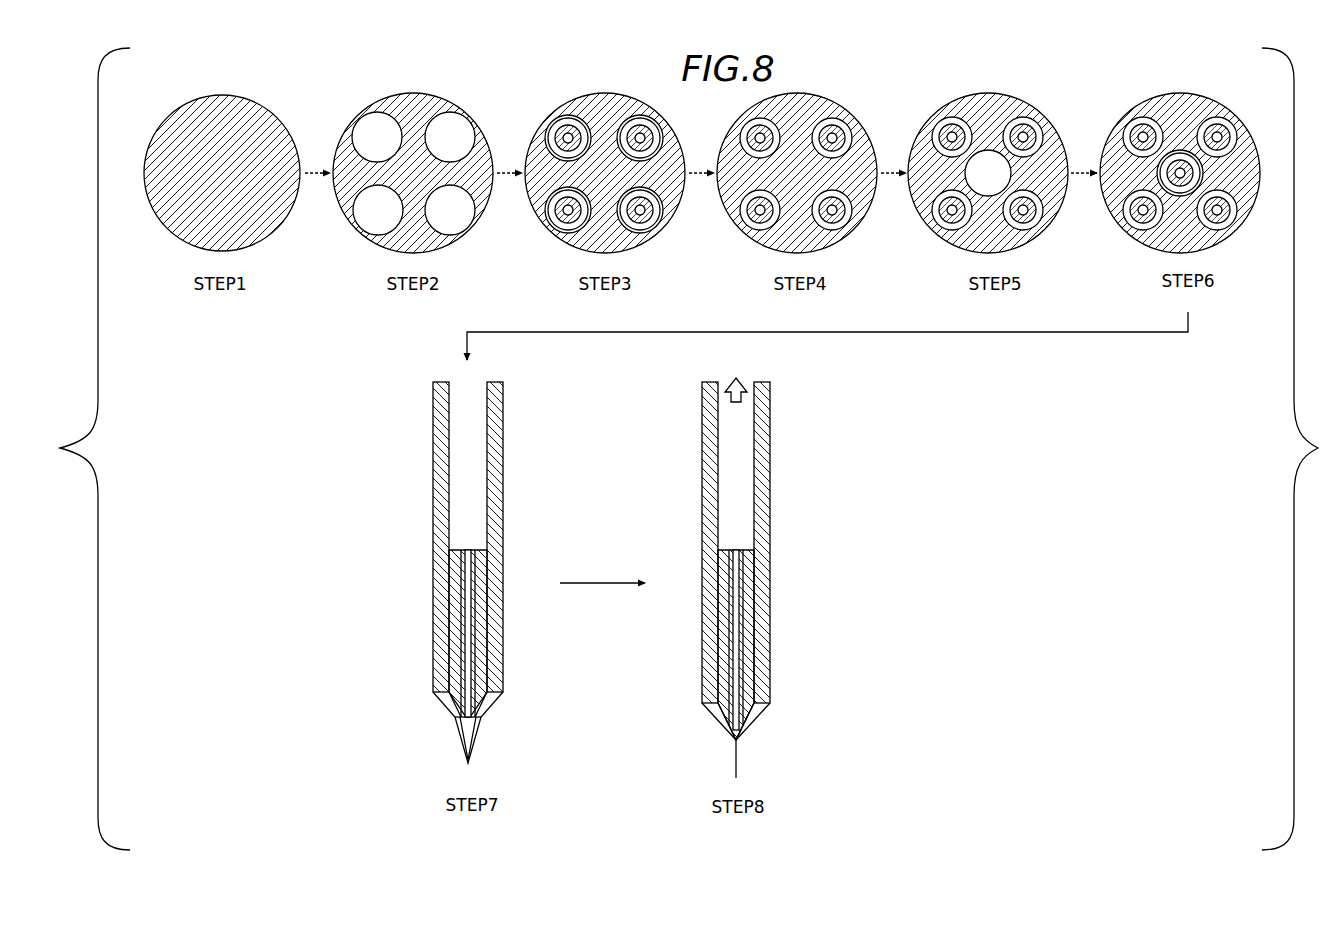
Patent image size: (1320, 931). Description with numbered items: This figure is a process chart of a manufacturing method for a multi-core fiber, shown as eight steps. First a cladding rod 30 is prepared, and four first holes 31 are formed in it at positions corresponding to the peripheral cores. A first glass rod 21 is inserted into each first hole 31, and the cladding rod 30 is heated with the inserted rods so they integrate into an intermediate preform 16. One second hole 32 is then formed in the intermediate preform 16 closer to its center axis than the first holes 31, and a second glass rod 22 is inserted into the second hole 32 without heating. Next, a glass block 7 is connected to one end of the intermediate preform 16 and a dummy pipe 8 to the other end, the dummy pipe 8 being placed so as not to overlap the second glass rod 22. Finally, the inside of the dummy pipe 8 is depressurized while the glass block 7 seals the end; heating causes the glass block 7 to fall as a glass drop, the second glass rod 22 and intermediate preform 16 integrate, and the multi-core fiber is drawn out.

The cladding rod 30 is at (176, 108).
The first holes 31 is at (378, 125).
The first glass rod 21 is at (560, 114).
The intermediate preform 16 is at (860, 112).
The second hole 32 is at (988, 152).
The second glass rod 22 is at (1190, 150).
The dummy pipe 8 is at (503, 480).
The glass block 7 is at (472, 728).